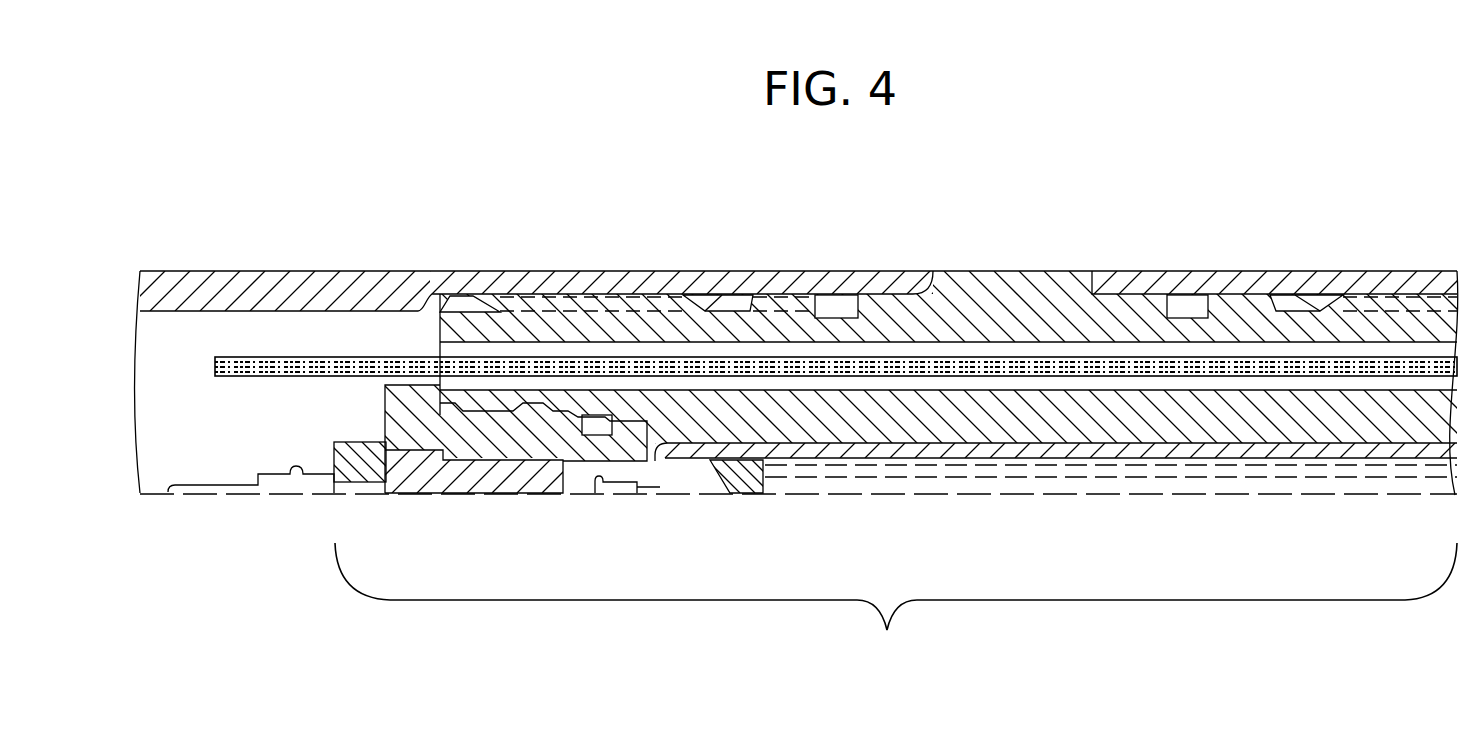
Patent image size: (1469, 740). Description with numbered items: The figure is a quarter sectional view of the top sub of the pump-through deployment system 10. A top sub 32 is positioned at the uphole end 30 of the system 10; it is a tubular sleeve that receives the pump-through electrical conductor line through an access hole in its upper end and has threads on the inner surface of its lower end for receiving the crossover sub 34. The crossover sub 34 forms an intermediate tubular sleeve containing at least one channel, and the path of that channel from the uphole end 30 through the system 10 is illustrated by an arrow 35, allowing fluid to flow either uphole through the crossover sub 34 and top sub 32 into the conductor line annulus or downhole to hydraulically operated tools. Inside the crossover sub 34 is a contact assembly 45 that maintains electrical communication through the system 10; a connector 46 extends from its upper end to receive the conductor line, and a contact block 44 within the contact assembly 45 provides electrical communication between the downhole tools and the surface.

The system 10 is at (678, 198).
The uphole end 30 is at (162, 458).
The top sub 32 is at (316, 271).
The crossover sub 34 is at (985, 271).
The arrow 35 is at (347, 357).
The contact block 44 is at (745, 480).
The contact assembly 45 is at (896, 605).
The connector 46 is at (282, 494).